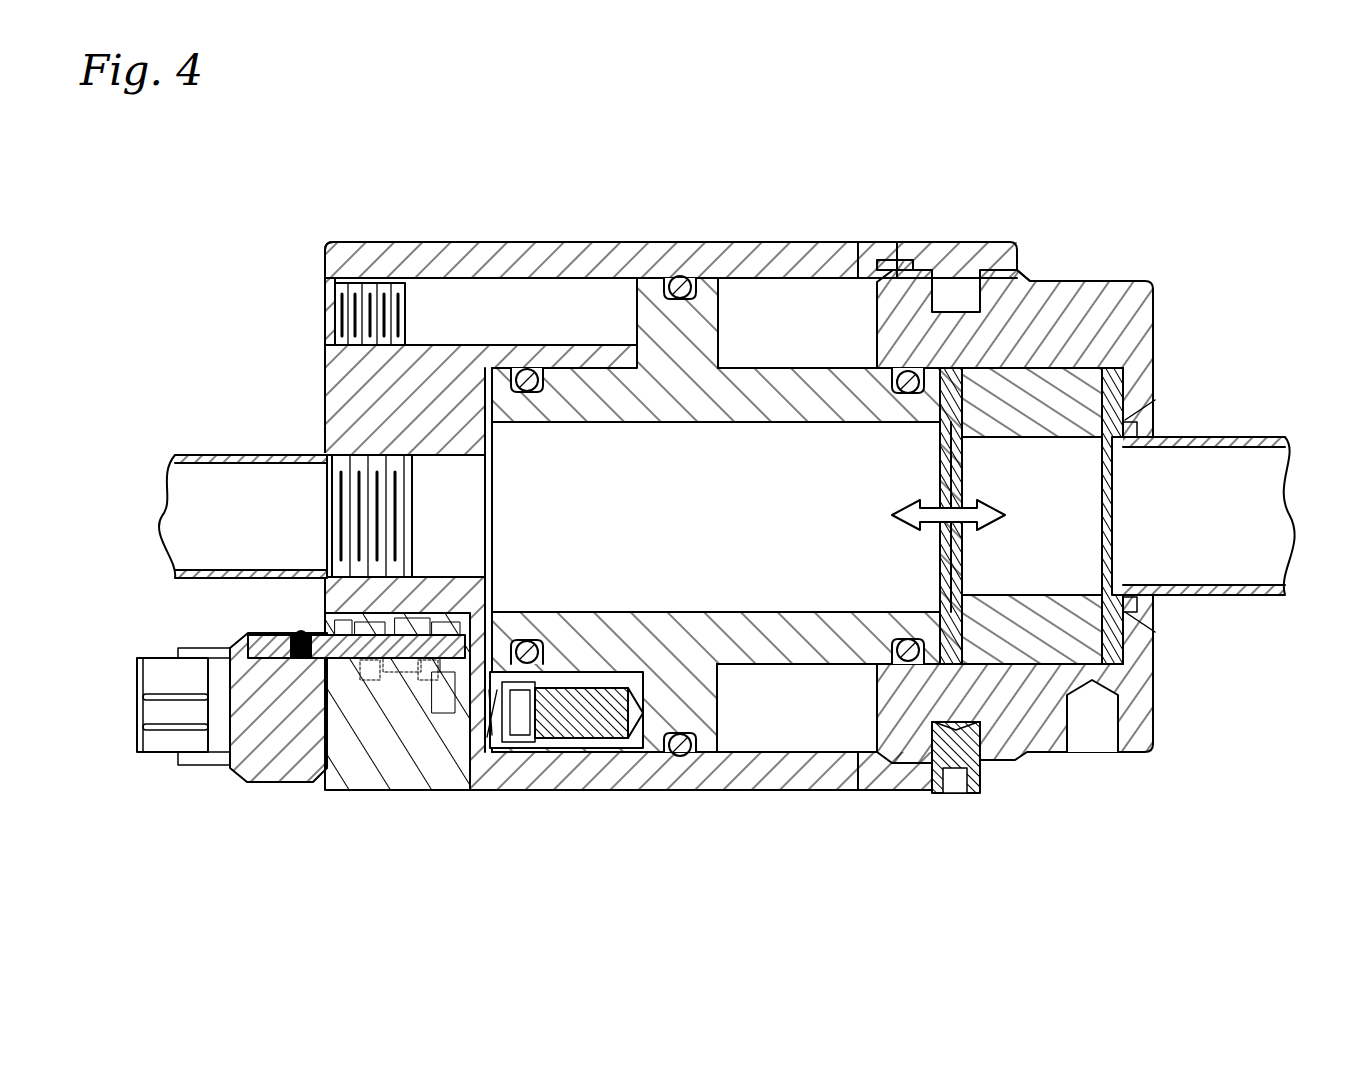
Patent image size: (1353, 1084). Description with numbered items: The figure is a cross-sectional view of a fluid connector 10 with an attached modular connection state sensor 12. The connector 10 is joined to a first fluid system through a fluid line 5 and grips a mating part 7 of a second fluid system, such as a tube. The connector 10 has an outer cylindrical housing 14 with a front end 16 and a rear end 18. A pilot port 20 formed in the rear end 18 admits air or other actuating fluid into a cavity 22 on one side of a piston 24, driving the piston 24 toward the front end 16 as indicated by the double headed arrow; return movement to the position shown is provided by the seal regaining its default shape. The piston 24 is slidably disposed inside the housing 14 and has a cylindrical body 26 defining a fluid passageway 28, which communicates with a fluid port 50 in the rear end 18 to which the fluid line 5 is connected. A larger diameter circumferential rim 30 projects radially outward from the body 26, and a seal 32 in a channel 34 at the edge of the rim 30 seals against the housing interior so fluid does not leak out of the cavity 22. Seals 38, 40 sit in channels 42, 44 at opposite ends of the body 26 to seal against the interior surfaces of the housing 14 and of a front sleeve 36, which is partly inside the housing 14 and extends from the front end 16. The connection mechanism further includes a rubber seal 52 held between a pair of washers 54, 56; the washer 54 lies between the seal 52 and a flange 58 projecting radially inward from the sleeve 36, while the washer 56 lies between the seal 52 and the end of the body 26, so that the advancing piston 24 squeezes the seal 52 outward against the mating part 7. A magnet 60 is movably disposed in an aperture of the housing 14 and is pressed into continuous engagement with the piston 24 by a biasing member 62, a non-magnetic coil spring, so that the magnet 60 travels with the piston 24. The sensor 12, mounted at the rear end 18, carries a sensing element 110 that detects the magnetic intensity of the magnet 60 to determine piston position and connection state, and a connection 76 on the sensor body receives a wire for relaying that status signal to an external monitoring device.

The fluid line 5 is at (205, 580).
The mating part 7 is at (1257, 597).
The fluid connector 10 is at (791, 896).
The modular connection state sensor 12 is at (350, 802).
The outer cylindrical housing 14 is at (538, 232).
The front end 16 is at (1018, 268).
The rear end 18 is at (323, 268).
The pilot port 20 is at (330, 307).
The cavity 22 is at (617, 293).
The piston 24 is at (742, 700).
The cylindrical body 26 is at (826, 580).
The fluid passageway 28 is at (900, 640).
The circumferential rim 30 is at (750, 285).
The seal 32 is at (718, 300).
The channel 34 is at (680, 272).
The front sleeve 36 is at (1063, 280).
The seal 38 is at (527, 366).
The seal 40 is at (913, 303).
The channel 42 is at (520, 365).
The channel 44 is at (903, 370).
The fluid port 50 is at (337, 497).
The seal 52 is at (1052, 700).
The washer 54 is at (1125, 648).
The washer 56 is at (1005, 772).
The flange 58 is at (1160, 428).
The magnet 60 is at (577, 760).
The biasing member 62 is at (523, 760).
The connection 76 is at (243, 779).
The sensing element 110 is at (440, 725).